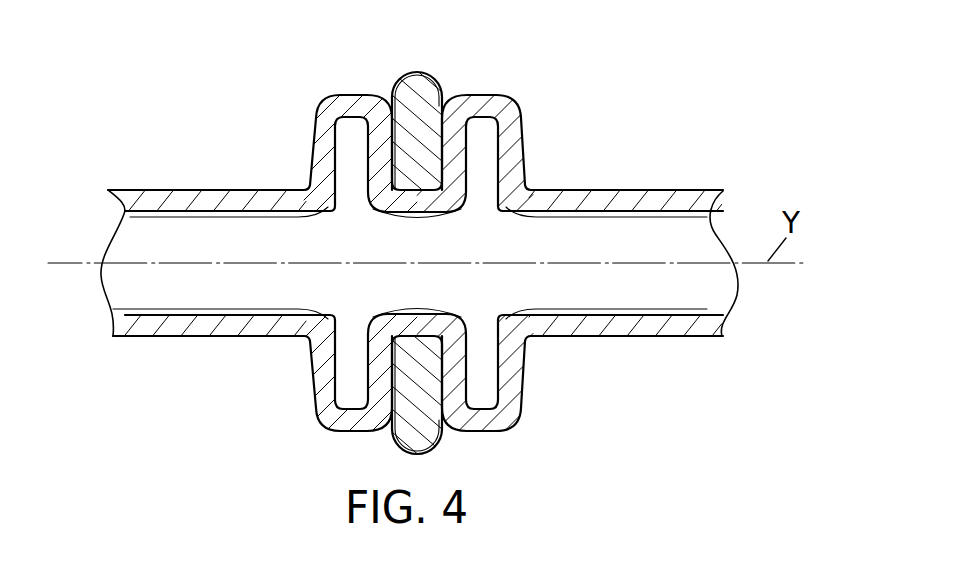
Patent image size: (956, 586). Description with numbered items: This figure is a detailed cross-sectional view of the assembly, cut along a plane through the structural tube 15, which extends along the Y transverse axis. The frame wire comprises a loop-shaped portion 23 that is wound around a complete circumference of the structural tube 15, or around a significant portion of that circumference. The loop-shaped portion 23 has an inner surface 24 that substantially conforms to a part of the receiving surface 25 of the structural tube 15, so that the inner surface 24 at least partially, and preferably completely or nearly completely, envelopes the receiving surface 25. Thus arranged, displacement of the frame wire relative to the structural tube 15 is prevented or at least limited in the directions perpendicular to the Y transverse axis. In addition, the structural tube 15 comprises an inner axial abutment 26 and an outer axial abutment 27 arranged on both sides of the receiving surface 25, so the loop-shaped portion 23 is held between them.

The structural tube 15 is at (636, 197).
The loop-shaped portion 23 is at (422, 82).
The inner surface 24 is at (420, 182).
The receiving surface 25 is at (425, 192).
The inner axial abutment 26 is at (341, 104).
The outer axial abutment 27 is at (490, 103).